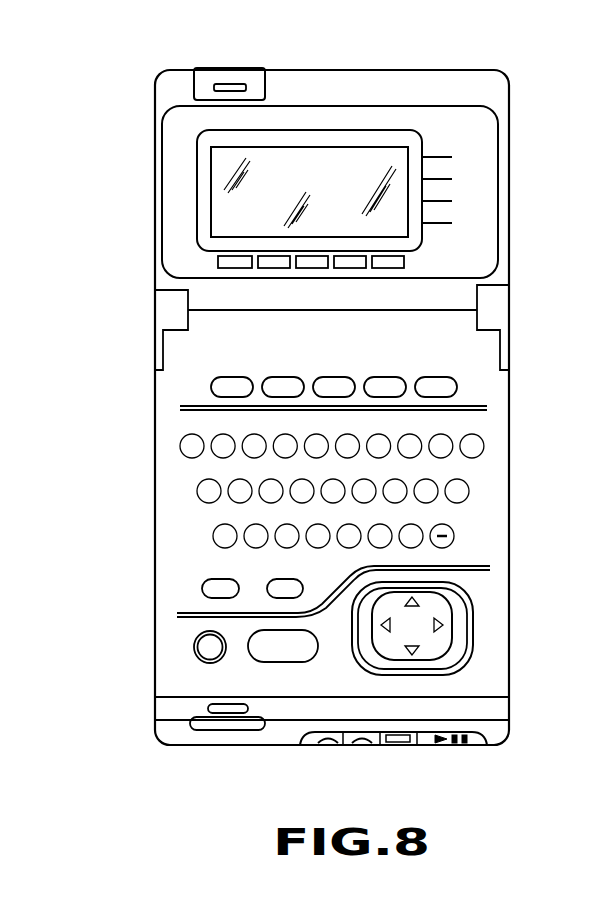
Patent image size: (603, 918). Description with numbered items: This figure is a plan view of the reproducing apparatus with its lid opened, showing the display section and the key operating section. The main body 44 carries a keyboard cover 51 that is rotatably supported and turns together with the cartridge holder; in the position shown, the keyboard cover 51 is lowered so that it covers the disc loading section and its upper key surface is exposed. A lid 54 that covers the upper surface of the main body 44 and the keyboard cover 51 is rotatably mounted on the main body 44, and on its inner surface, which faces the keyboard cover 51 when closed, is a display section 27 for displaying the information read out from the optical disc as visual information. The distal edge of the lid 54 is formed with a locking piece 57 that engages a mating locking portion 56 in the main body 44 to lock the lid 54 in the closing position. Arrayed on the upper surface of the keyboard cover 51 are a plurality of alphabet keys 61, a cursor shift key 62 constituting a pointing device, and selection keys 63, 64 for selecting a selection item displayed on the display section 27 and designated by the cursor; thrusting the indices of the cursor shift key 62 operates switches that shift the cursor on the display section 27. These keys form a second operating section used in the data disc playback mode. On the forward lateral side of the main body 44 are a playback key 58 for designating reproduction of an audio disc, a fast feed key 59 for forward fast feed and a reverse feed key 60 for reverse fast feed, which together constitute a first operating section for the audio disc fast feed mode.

The main body 44 is at (508, 730).
The keyboard cover 51 is at (500, 536).
The lid 54 is at (493, 82).
The locking piece 57 is at (230, 74).
The display section 27 is at (397, 165).
The selection keys 64 is at (232, 377).
The alphabet keys 61 is at (454, 532).
The cursor shift key 62 is at (445, 611).
The selection keys 63 is at (268, 662).
The mating locking portion 56 is at (223, 712).
The fast feed key 59 is at (328, 745).
The reverse feed key 60 is at (362, 745).
The playback key 58 is at (400, 745).